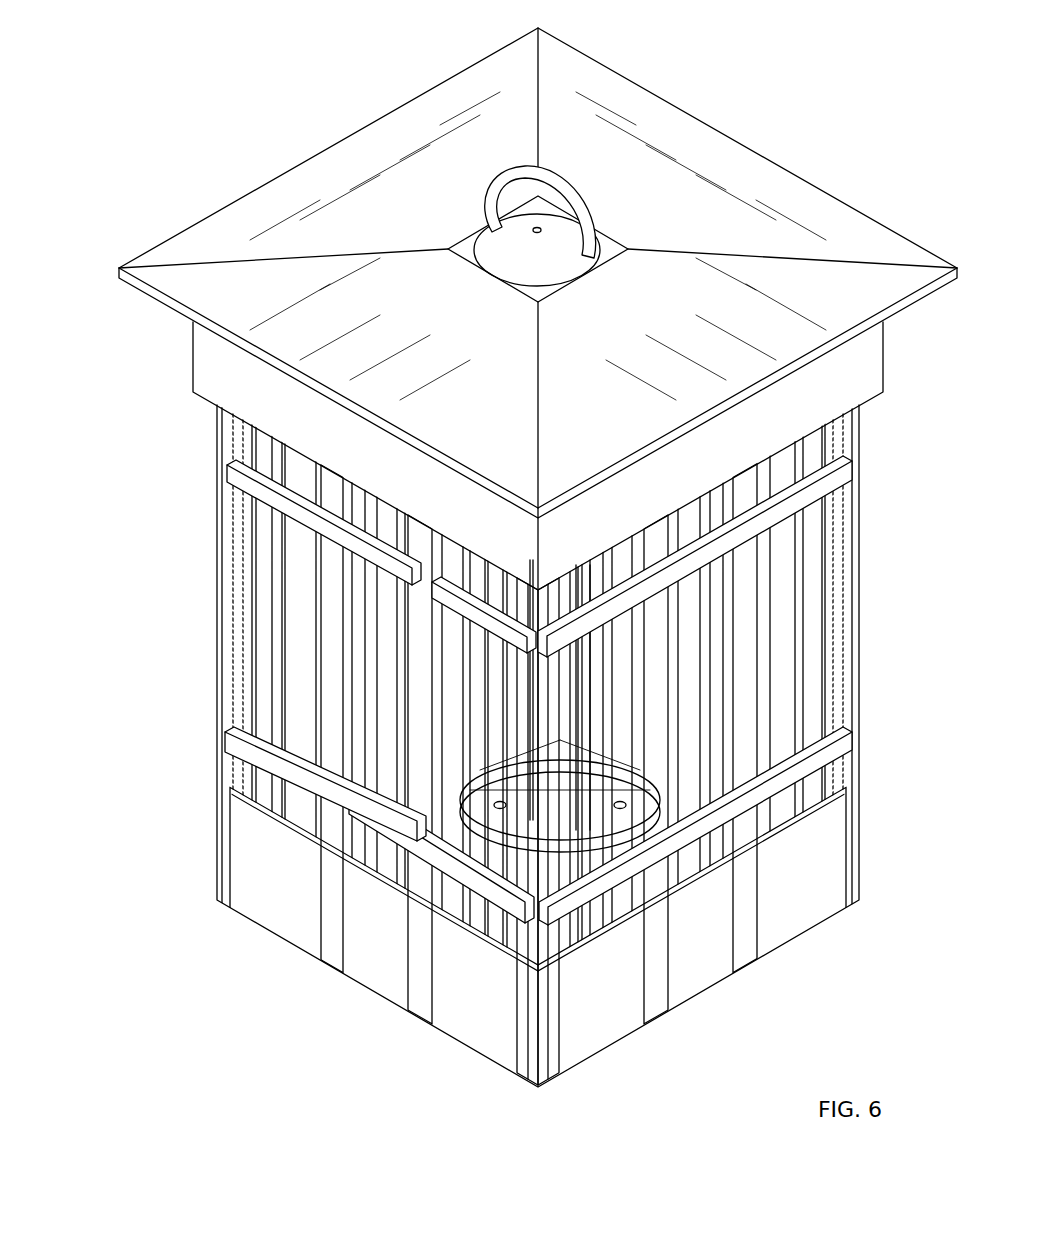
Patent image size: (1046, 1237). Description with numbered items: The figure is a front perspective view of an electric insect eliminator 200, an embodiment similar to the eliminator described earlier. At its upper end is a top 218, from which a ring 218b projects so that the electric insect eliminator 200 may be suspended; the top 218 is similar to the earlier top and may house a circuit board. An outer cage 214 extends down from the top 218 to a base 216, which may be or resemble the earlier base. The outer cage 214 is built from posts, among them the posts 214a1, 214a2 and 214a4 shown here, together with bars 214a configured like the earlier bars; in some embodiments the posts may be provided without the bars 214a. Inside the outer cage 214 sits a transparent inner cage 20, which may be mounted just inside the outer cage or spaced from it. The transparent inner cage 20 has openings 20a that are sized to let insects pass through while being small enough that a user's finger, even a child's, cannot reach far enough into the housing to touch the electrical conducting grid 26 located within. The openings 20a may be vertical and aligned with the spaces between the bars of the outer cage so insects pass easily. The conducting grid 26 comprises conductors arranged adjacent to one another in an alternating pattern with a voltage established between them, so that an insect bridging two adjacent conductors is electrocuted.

The electric insect eliminator 200 is at (252, 155).
The top 218 is at (693, 150).
The ring 218b is at (522, 182).
The electrical conducting grid 26 is at (580, 680).
The outer cage 214 is at (257, 577).
The bars 214a is at (415, 742).
The post 214a1 is at (228, 700).
The post 214a2 is at (540, 838).
The post 214a4 is at (838, 690).
The base 216 is at (300, 893).
The transparent inner cage 20 is at (793, 630).
The openings 20a is at (707, 760).